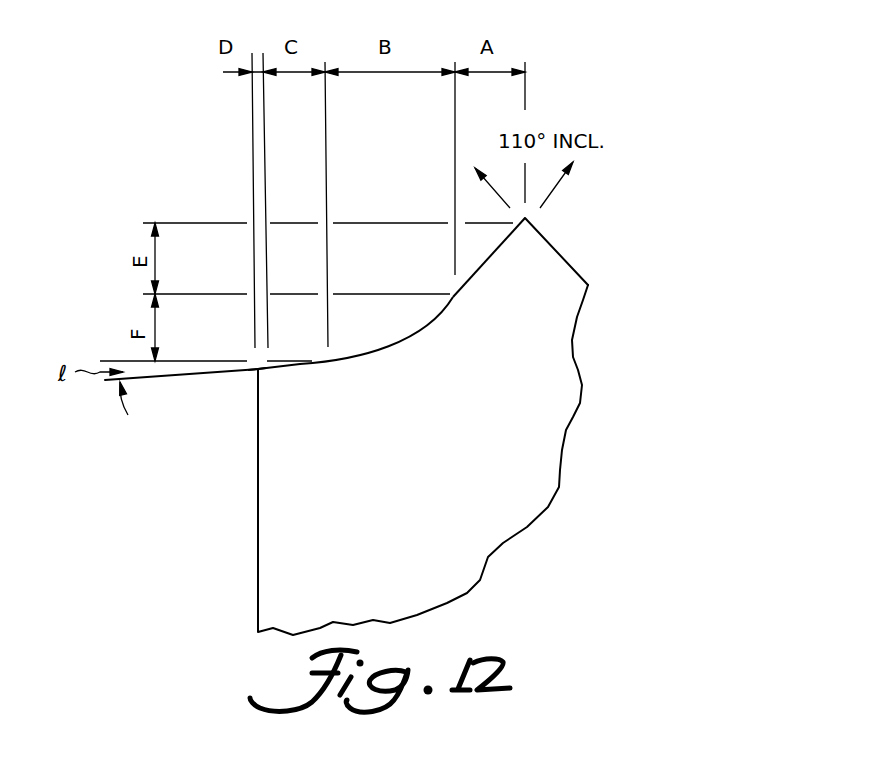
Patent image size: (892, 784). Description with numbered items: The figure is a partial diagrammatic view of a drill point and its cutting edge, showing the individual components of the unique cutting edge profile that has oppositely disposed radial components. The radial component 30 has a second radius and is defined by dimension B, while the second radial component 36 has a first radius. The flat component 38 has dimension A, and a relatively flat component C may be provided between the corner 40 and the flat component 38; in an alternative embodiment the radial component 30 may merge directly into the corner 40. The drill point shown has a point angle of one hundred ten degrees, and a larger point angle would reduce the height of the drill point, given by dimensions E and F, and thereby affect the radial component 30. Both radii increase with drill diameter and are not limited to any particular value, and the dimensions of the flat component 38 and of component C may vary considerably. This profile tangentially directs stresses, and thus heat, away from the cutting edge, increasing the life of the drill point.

The second radial component 36 is at (253, 362).
The corner 40 is at (262, 372).
The flat component 38 is at (493, 257).
The radial component 30 is at (403, 342).